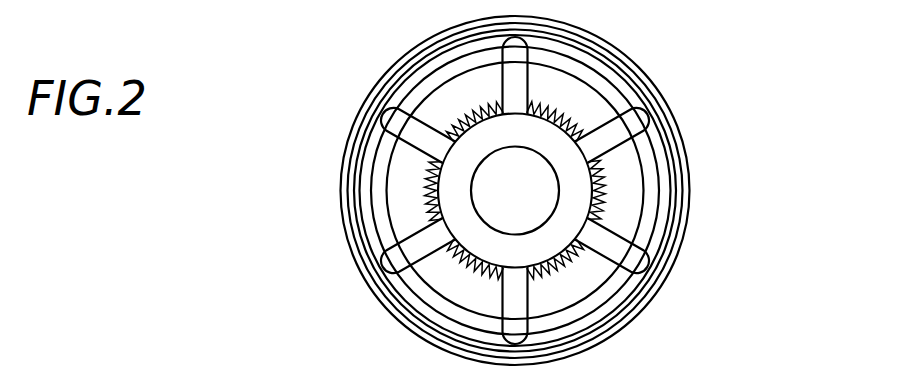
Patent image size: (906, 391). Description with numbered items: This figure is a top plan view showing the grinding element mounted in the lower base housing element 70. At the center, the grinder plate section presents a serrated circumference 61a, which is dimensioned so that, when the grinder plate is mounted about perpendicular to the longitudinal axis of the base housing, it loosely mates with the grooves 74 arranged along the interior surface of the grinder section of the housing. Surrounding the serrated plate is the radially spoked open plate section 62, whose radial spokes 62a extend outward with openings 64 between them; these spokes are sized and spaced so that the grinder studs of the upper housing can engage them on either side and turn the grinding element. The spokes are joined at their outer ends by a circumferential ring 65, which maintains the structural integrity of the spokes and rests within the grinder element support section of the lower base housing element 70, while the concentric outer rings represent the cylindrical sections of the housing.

The serrated circumference 61a is at (428, 188).
The radially spoked open plate section 62 is at (681, 133).
The radial spokes 62a is at (643, 266).
The openings 64 is at (453, 97).
The circumferential ring 65 is at (652, 200).
The lower base housing element 70 is at (655, 89).
The grooves 74 is at (428, 190).